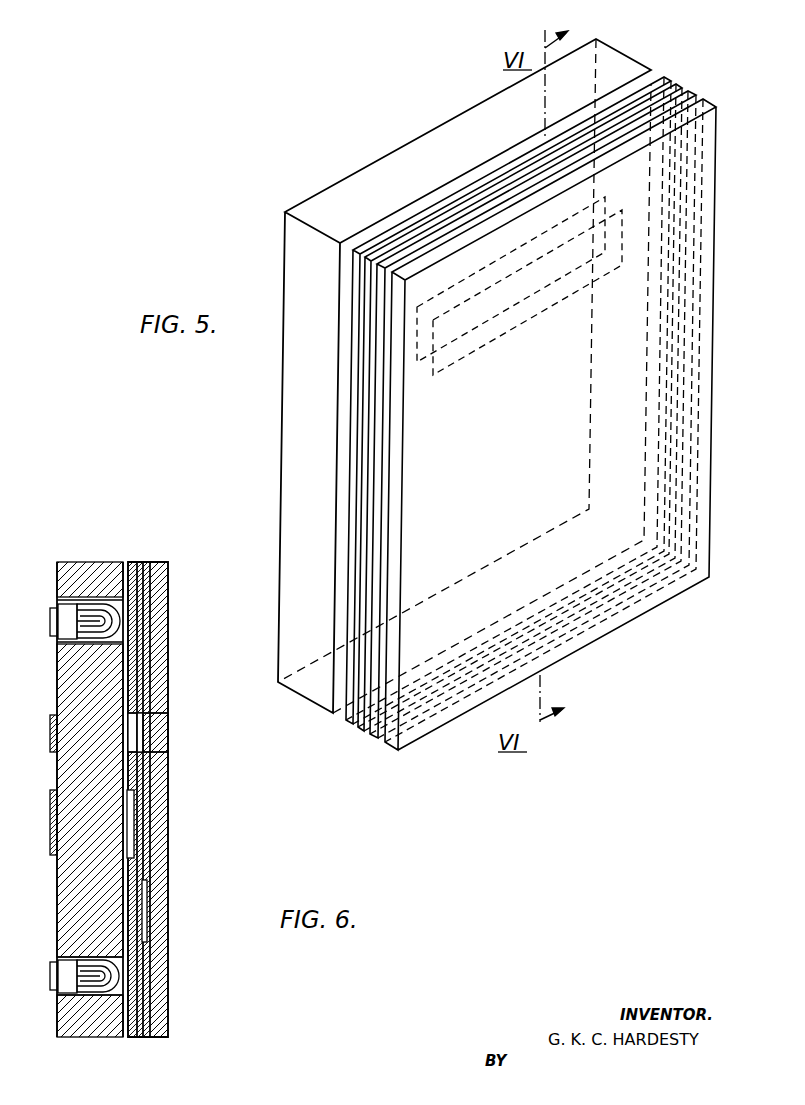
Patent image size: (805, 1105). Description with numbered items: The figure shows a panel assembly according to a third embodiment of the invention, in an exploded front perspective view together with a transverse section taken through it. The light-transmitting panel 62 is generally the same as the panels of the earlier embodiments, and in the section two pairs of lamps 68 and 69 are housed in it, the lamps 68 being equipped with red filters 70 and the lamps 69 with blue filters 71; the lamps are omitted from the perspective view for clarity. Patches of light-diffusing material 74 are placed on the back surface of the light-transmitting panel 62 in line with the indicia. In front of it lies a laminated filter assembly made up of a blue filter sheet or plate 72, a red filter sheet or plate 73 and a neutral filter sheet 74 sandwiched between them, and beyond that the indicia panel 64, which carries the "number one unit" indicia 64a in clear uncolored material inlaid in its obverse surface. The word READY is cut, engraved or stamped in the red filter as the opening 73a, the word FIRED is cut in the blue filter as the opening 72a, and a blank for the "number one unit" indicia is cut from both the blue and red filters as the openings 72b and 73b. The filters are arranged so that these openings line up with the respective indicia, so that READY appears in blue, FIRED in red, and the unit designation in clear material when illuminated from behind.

In FIG. 5, the light-transmitting panel 62 is at (347, 185).
In FIG. 6, the light-transmitting panel 62 is at (70, 765).
In FIG. 5, the indicia panel 64 is at (713, 164).
In FIG. 6, the indicia panel 64 is at (168, 605).
In FIG. 5, the indicia 64a is at (525, 344).
In FIG. 6, the indicia 64a is at (155, 738).
In FIG. 6, the lamps 68 is at (58, 612).
In FIG. 6, the lamps 69 is at (58, 968).
In FIG. 6, the red filter 70 is at (97, 605).
In FIG. 6, the blue filter 71 is at (95, 995).
In FIG. 5, the blue filter sheet or plate 72 is at (700, 100).
In FIG. 6, the blue filter sheet or plate 72 is at (150, 565).
In FIG. 5, the FIRED opening 72a is at (548, 547).
In FIG. 6, the FIRED opening 72a is at (147, 910).
In FIG. 5, the blank opening 72b is at (435, 375).
In FIG. 6, the blank opening 72b is at (145, 728).
In FIG. 5, the red filter sheet or plate 73 is at (667, 78).
In FIG. 6, the red filter sheet or plate 73 is at (134, 562).
In FIG. 5, the READY opening 73a is at (578, 432).
In FIG. 6, the READY opening 73a is at (132, 826).
In FIG. 5, the blank opening 73b is at (606, 196).
In FIG. 6, the blank opening 73b is at (140, 716).
In FIG. 5, the neutral filter sheet 74 is at (684, 90).
In FIG. 6, the neutral filter sheet 74 is at (50, 730).